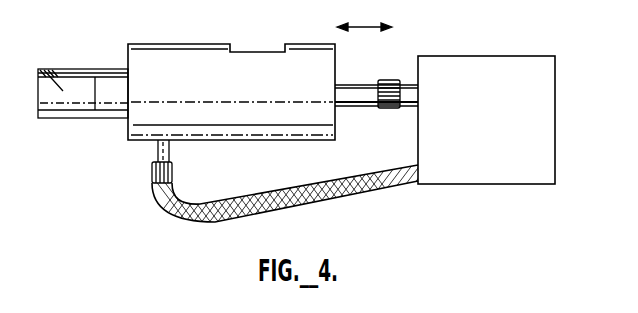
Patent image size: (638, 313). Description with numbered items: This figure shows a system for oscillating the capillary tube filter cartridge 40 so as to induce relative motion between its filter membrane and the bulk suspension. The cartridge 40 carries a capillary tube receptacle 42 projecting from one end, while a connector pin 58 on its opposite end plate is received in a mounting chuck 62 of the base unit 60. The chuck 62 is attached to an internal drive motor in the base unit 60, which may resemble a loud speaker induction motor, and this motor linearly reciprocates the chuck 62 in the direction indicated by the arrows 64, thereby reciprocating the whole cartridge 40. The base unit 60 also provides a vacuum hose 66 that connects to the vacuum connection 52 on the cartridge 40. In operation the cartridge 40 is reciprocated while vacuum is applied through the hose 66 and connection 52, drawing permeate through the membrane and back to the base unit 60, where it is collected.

The filter cartridge 40 is at (200, 32).
The capillary tube receptacle 42 is at (65, 68).
The vacuum connection 52 is at (156, 150).
The connector pin 58 is at (343, 85).
The base unit 60 is at (545, 167).
The mounting chuck 62 is at (386, 80).
The arrows 64 is at (365, 28).
The vacuum hose 66 is at (300, 208).